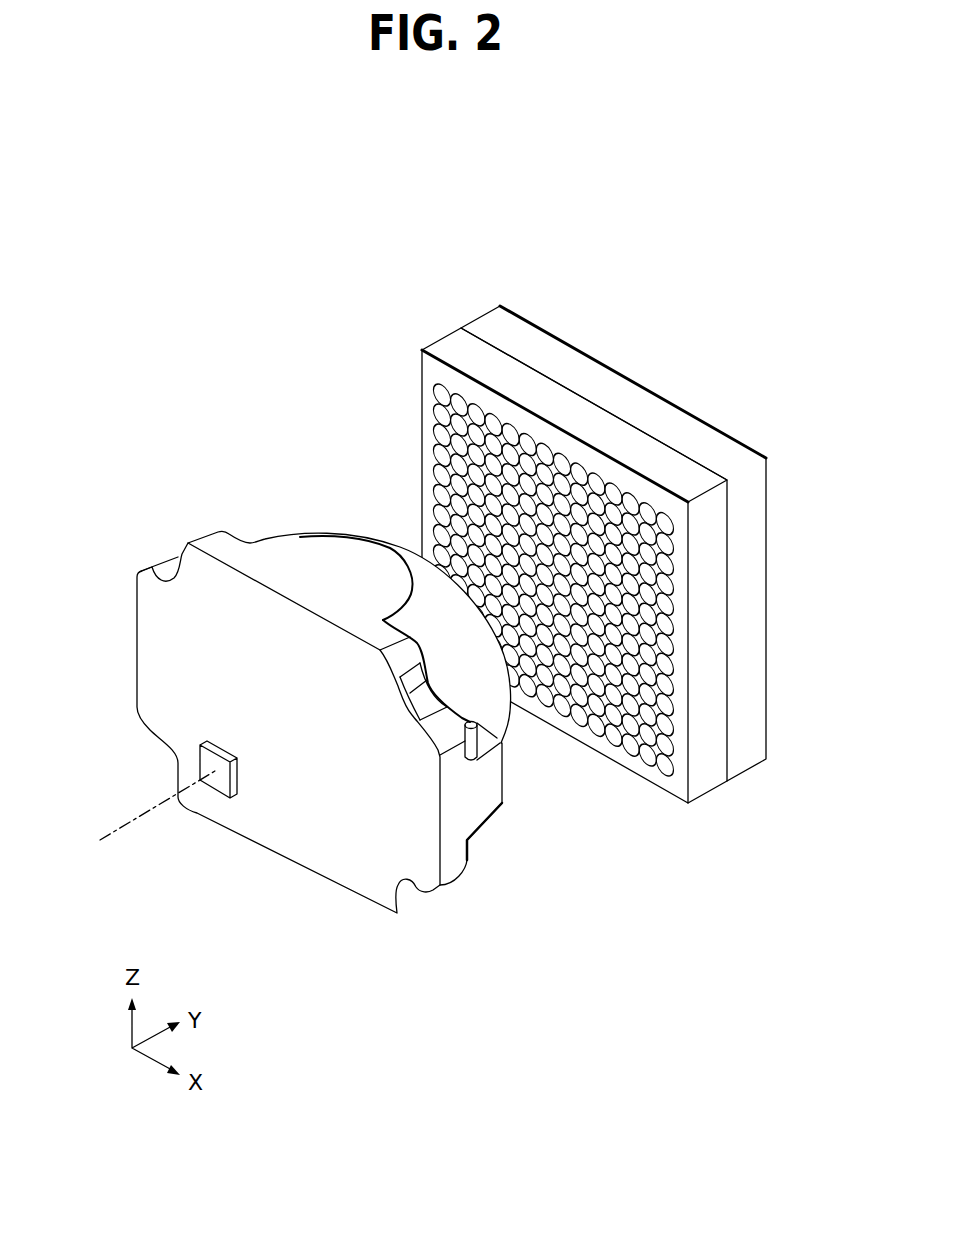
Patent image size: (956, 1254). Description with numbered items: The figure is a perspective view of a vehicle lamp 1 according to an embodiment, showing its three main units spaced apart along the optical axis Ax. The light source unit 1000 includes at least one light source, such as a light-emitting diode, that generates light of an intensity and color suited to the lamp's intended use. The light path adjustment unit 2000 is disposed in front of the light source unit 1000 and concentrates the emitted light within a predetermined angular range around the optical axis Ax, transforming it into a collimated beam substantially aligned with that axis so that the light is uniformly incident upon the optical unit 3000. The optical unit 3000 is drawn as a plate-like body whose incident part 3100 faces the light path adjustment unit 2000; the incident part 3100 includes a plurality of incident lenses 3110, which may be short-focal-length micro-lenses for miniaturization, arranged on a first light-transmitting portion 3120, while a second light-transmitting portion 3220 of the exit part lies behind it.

The vehicle lamp 1 is at (224, 213).
The light source unit 1000 is at (218, 782).
The light path adjustment unit 2000 is at (342, 762).
The optical unit 3000 is at (557, 569).
The incident part 3100 is at (520, 528).
The incident lenses 3110 is at (432, 413).
The first light-transmitting portion 3120 is at (450, 347).
The second light-transmitting portion 3220 is at (488, 320).